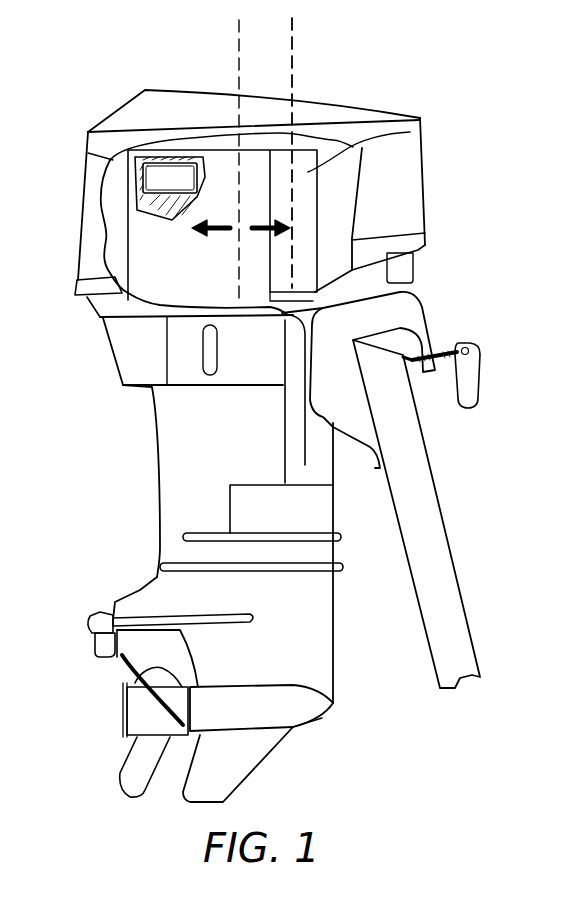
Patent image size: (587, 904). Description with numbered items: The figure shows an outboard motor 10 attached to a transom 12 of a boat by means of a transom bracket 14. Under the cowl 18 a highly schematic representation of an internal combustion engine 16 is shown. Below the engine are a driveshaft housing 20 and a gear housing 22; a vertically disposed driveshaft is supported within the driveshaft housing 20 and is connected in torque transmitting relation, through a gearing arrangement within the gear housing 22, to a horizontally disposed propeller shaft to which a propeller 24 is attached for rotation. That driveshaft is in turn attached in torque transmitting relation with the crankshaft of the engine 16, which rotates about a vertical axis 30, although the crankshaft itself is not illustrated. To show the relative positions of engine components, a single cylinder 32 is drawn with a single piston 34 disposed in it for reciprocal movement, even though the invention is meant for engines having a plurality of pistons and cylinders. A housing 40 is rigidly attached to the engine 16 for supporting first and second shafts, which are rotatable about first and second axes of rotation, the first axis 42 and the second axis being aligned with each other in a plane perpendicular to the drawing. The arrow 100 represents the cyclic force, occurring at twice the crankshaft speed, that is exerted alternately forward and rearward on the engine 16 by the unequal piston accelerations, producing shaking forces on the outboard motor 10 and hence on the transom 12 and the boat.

The outboard motor 10 is at (74, 98).
The transom 12 is at (418, 513).
The transom bracket 14 is at (410, 315).
The internal combustion engine 16 is at (147, 247).
The cowl 18 is at (128, 108).
The driveshaft housing 20 is at (167, 508).
The gear housing 22 is at (320, 707).
The propeller 24 is at (140, 718).
The vertical axis 30 is at (238, 45).
The cylinder 32 is at (133, 173).
The piston 34 is at (160, 182).
The housing 40 is at (410, 132).
The first axis of rotation 42 is at (292, 50).
The arrow 100 is at (222, 234).